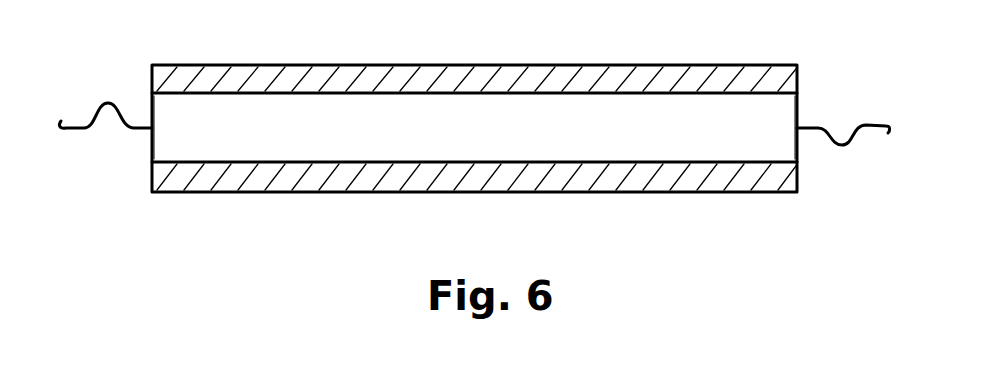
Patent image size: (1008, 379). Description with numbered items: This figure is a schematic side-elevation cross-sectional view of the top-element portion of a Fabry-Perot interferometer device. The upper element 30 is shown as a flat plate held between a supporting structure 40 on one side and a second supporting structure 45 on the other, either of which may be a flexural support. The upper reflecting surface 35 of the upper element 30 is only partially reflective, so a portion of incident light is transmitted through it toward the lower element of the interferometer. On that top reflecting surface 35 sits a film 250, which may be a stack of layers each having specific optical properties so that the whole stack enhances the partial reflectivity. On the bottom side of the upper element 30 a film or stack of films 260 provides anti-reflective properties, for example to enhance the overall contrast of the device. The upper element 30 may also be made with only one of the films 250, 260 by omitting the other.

The upper element 30 is at (457, 118).
The upper reflecting surface 35 is at (592, 64).
The supporting structure 40 is at (110, 102).
The second supporting structure 45 is at (860, 122).
The film 250 is at (342, 76).
The film or stack of films 260 is at (340, 178).